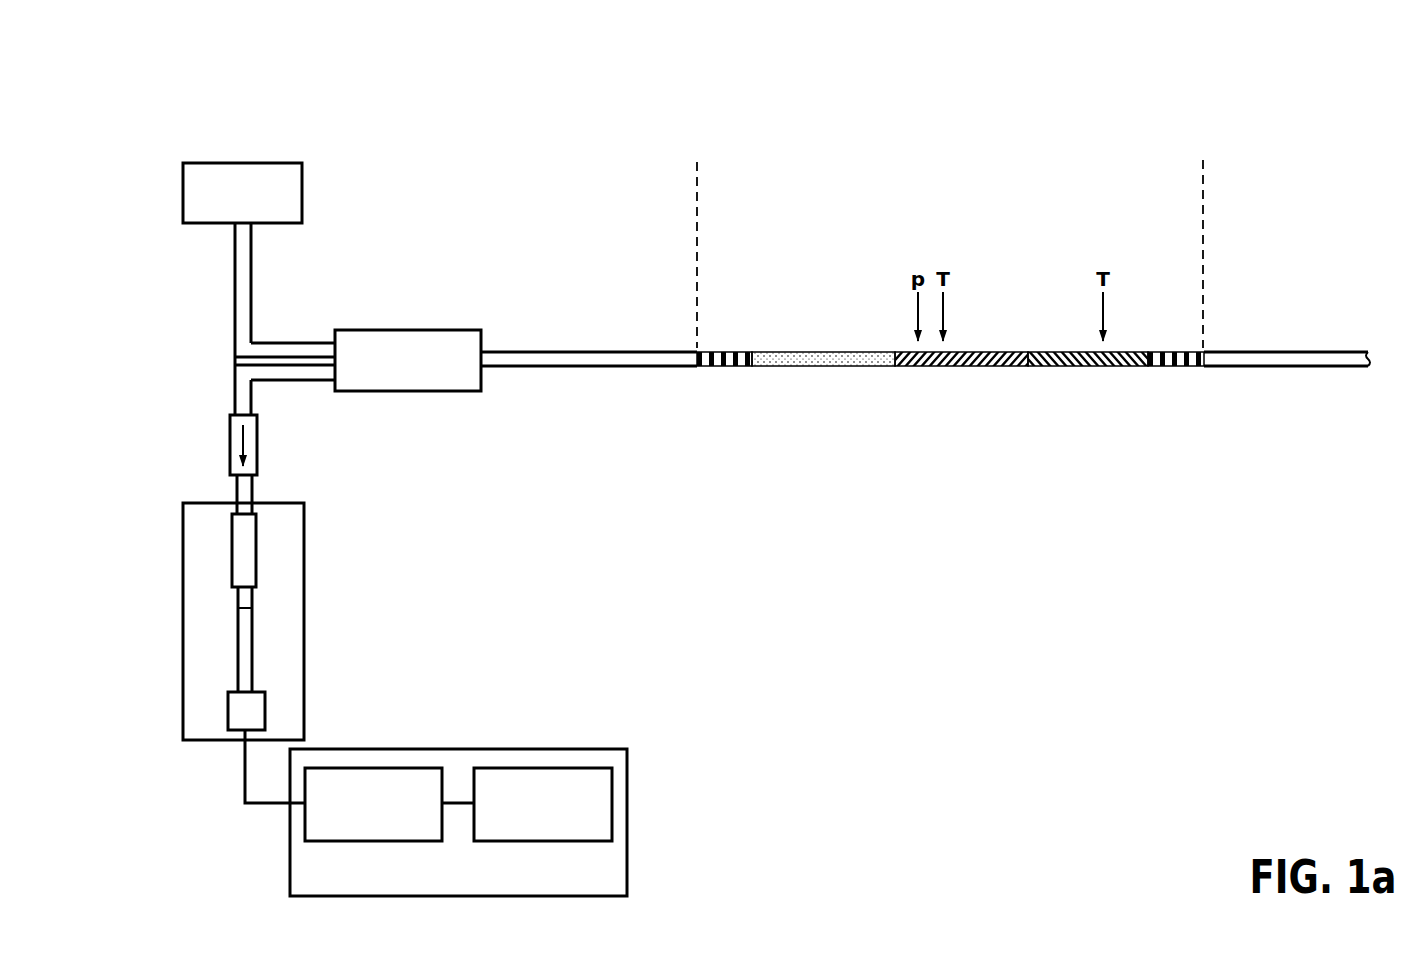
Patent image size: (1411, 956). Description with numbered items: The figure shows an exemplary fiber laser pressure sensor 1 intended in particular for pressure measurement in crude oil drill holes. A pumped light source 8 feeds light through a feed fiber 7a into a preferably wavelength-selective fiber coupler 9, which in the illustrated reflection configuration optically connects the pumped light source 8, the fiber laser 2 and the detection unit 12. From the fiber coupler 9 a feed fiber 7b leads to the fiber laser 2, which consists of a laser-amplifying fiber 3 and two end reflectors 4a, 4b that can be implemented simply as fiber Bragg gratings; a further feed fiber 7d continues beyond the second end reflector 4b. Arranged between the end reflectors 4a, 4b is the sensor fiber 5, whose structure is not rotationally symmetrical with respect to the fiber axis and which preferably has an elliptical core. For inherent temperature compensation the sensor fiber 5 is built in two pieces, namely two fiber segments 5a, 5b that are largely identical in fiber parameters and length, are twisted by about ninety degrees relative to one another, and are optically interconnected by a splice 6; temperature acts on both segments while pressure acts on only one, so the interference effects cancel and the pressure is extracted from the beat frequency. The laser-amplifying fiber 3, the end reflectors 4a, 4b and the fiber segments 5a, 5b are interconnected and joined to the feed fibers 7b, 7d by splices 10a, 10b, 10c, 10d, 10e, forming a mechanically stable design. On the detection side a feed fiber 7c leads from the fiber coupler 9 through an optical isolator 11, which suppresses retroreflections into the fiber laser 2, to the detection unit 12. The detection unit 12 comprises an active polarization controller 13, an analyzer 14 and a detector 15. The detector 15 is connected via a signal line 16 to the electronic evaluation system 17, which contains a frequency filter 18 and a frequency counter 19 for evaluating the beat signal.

The fiber laser pressure sensor 1 is at (242, 87).
The fiber laser 2 is at (697, 180).
The laser-amplifying fiber 3 is at (812, 367).
The end reflector 4a is at (720, 367).
The end reflector 4b is at (1178, 367).
The sensor fiber 5 is at (893, 468).
The fiber segment 5a is at (943, 367).
The fiber segment 5b is at (1110, 367).
The splice 6 is at (1029, 350).
The feed fiber 7a is at (294, 349).
The feed fiber 7b is at (608, 359).
The feed fiber 7c is at (294, 373).
The feed fiber 7d is at (1333, 357).
The pumped light source 8 is at (231, 209).
The fiber coupler 9 is at (397, 375).
The splice 10a is at (696, 348).
The splice 10b is at (752, 348).
The splice 10c is at (892, 348).
The splice 10d is at (1151, 348).
The splice 10e is at (1207, 348).
The optical isolator 11 is at (237, 423).
The detection unit 12 is at (188, 546).
The active polarization controller 13 is at (243, 575).
The analyzer 14 is at (247, 636).
The detector 15 is at (247, 708).
The signal line 16 is at (242, 790).
The electronic evaluation system 17 is at (313, 886).
The frequency filter 18 is at (353, 818).
The frequency counter 19 is at (523, 818).